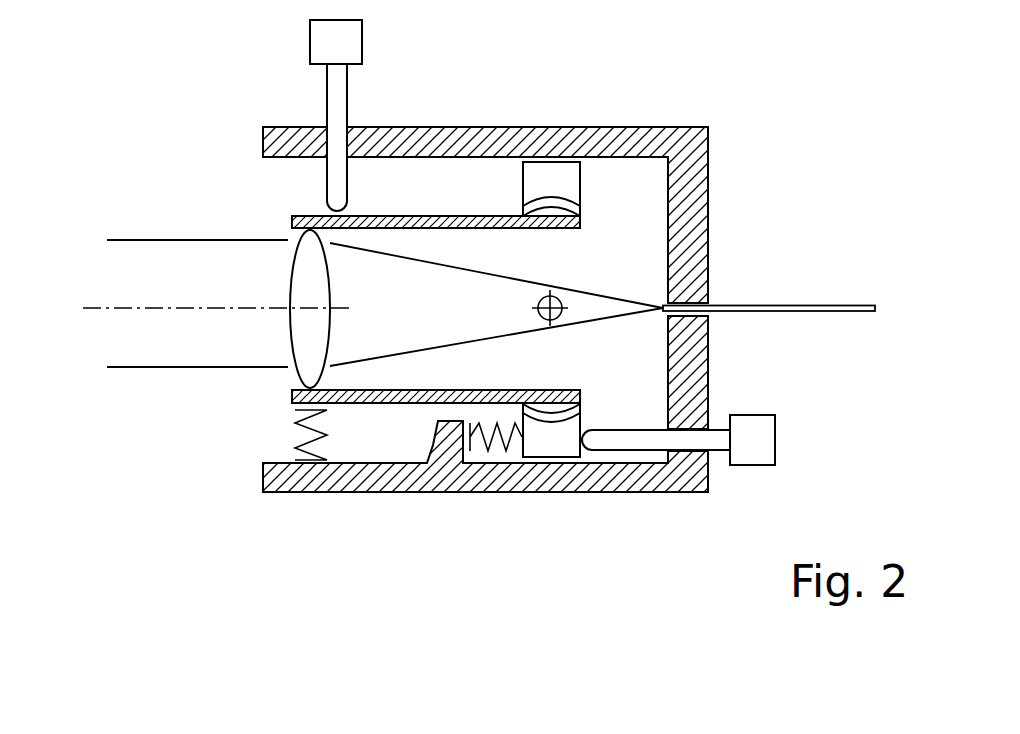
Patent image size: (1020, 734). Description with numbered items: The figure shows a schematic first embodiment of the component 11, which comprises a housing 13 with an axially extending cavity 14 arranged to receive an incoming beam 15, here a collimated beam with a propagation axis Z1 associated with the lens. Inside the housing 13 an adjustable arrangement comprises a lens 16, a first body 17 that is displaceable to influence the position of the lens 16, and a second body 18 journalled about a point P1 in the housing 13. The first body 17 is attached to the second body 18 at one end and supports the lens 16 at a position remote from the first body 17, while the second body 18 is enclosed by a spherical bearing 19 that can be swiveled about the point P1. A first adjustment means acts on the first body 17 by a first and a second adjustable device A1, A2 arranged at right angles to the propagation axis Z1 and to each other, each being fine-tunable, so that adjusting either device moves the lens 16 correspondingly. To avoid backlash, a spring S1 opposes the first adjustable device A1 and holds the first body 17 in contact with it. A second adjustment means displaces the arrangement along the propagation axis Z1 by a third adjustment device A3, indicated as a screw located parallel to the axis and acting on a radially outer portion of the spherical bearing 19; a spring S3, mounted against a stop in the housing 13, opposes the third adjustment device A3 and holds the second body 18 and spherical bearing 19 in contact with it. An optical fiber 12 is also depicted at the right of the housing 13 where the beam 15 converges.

The component 11 is at (555, 266).
The optical fiber 12 is at (758, 305).
The housing 13 is at (700, 195).
The cavity 14 is at (375, 198).
The incoming beam 15 is at (118, 240).
The lens 16 is at (290, 277).
The first body 17 is at (370, 403).
The second body 18 is at (523, 211).
The spherical bearing 19 is at (523, 177).
The first adjustable device A1 is at (308, 35).
The second adjustable device A2 is at (258, 337).
The third adjustment device A3 is at (742, 465).
The spring S1 is at (297, 440).
The spring S3 is at (498, 440).
The point P1 is at (568, 315).
The propagation axis Z1 is at (108, 310).